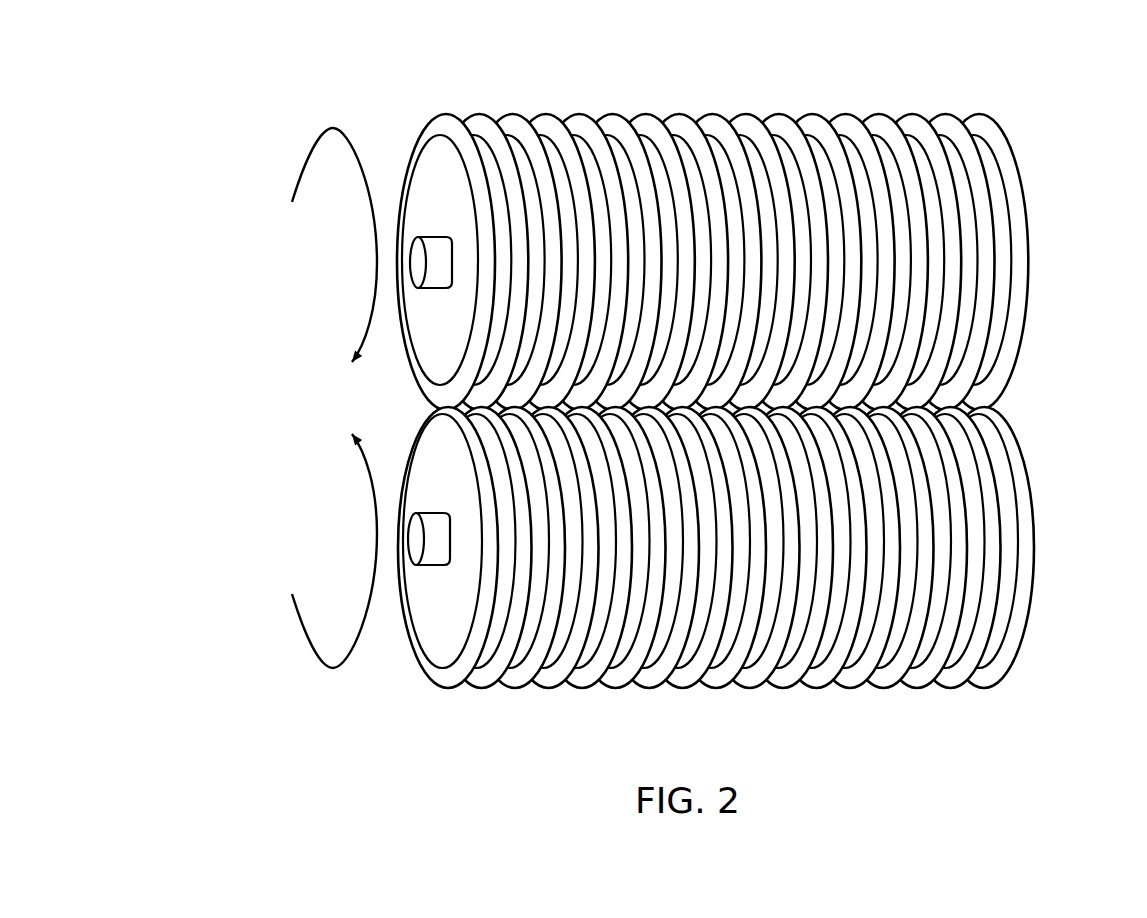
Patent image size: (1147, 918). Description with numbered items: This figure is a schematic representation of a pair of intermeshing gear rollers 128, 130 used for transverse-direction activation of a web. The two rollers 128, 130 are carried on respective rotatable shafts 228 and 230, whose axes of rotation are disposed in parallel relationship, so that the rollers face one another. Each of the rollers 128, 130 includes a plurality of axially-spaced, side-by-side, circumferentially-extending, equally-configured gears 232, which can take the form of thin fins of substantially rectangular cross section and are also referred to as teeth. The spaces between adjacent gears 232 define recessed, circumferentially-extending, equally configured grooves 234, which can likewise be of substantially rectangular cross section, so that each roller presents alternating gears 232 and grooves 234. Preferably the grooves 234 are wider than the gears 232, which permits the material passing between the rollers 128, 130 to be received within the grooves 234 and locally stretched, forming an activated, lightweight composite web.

The intermeshing gear roller 128 is at (592, 219).
The intermeshing gear roller 130 is at (596, 583).
The rotatable shaft 228 is at (418, 258).
The rotatable shaft 230 is at (420, 537).
The gear 232 is at (1021, 407).
The groove 234 is at (999, 353).